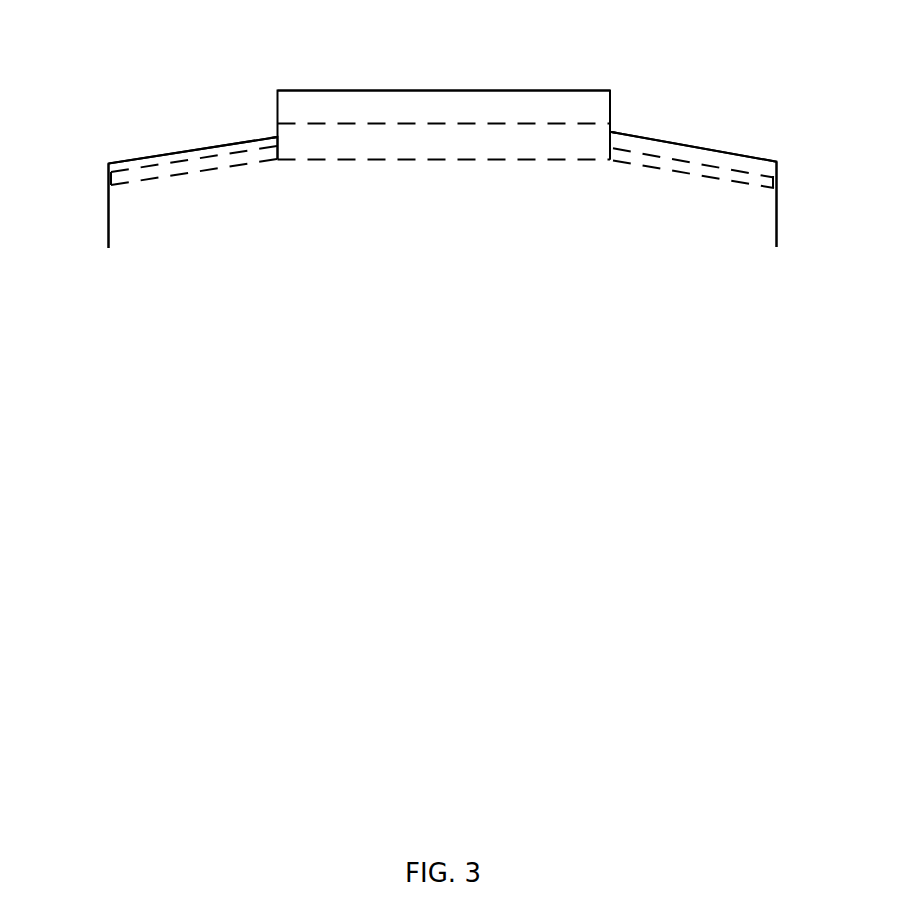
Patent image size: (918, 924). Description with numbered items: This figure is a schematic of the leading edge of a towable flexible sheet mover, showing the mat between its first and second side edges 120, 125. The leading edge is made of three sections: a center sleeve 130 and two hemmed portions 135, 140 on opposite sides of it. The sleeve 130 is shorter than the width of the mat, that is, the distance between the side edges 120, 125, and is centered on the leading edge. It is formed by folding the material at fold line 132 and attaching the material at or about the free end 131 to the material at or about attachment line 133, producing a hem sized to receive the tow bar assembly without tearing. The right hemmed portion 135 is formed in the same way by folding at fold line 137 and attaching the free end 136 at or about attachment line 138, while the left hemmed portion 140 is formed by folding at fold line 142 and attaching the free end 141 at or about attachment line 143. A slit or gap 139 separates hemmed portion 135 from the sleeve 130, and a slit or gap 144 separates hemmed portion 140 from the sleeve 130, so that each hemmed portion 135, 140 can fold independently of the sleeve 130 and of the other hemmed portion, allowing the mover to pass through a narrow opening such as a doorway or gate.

The first side edge 120 is at (108, 232).
The second side edge 125 is at (776, 227).
The sleeve 130 is at (278, 90).
The free end 131 is at (444, 90).
The fold line 132 is at (498, 124).
The attachment line 133 is at (408, 160).
The hemmed portion 135 is at (108, 164).
The free end 136 is at (192, 150).
The fold line 137 is at (155, 165).
The attachment line 138 is at (193, 173).
The slit or gap 139 is at (276, 142).
The hemmed portion 140 is at (776, 162).
The free end 141 is at (692, 146).
The fold line 142 is at (647, 154).
The attachment line 143 is at (692, 177).
The slit or gap 144 is at (611, 150).